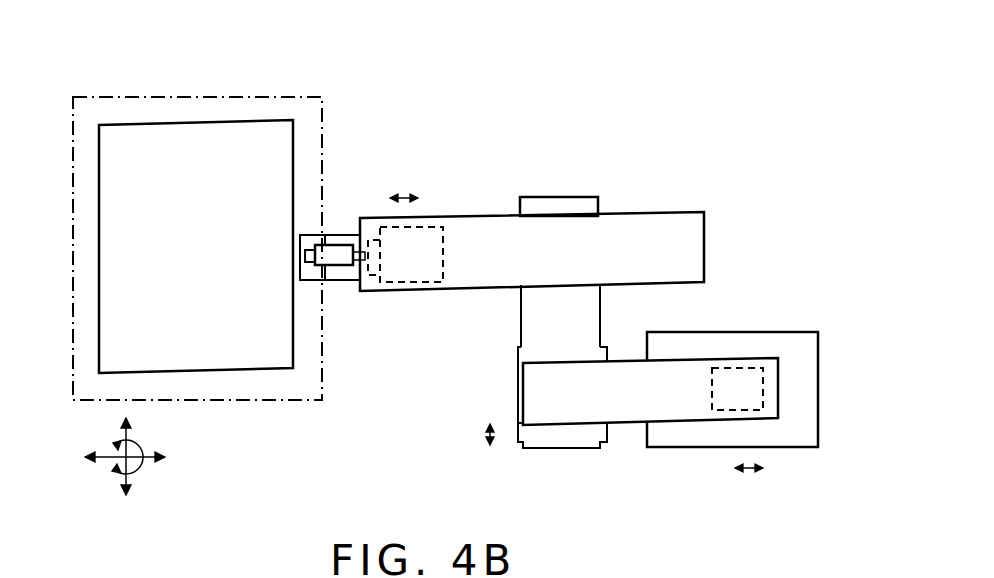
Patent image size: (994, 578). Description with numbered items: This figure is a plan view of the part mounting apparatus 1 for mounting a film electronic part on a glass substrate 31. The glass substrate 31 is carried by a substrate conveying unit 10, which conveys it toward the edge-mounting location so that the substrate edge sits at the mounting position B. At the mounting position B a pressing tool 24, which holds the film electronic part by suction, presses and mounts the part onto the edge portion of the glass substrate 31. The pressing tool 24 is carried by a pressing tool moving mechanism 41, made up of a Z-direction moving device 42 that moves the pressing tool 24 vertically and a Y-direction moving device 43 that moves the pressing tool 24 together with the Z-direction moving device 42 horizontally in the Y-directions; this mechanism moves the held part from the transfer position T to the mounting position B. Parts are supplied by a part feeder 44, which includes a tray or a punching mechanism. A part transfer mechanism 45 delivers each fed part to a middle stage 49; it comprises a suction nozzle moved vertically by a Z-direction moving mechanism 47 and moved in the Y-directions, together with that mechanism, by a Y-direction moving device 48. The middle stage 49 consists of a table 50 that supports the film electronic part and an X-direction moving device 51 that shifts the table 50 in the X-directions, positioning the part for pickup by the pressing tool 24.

The part mounting apparatus 1 is at (583, 84).
The substrate conveying unit 10 is at (78, 310).
The glass substrate 31 is at (104, 95).
The pressing tool 24 is at (339, 220).
The mounting position B is at (325, 280).
The pressing tool moving mechanism 41 is at (503, 148).
The Z-direction moving device 42 is at (434, 222).
The Y-direction moving device 43 is at (452, 218).
The transfer position T is at (575, 247).
The middle stage 49 is at (458, 294).
The X-direction moving device 51 is at (535, 305).
The table 50 is at (530, 352).
The part transfer mechanism 45 is at (767, 276).
The Z-direction moving mechanism 47 is at (728, 382).
The Y-direction moving device 48 is at (693, 362).
The part feeder 44 is at (810, 378).